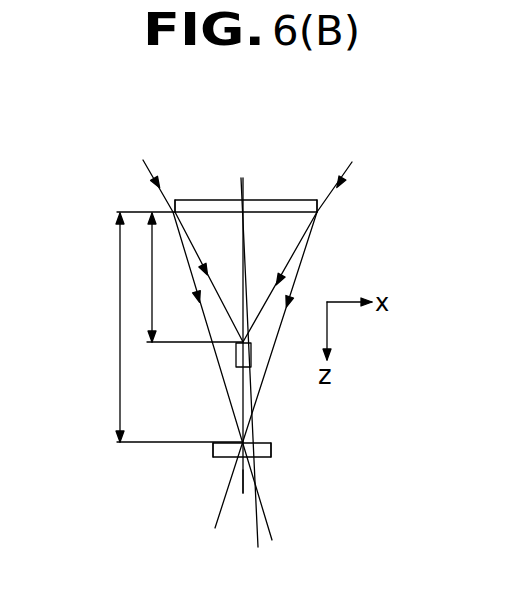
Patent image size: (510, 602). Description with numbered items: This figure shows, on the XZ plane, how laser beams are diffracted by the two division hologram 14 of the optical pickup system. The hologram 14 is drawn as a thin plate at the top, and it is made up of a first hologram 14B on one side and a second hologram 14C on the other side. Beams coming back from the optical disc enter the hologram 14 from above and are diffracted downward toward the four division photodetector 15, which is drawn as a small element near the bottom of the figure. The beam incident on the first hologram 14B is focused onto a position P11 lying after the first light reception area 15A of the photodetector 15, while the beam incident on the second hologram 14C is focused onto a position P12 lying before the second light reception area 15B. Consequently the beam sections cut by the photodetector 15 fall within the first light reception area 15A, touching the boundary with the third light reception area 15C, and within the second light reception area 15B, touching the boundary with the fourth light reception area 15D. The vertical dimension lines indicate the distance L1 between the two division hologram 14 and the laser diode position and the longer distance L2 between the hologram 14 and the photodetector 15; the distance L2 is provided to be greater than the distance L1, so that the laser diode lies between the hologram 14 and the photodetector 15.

The two division hologram 14 is at (201, 199).
The first hologram 14B is at (186, 202).
The second hologram 14C is at (319, 206).
The four division photodetector 15 is at (271, 457).
The first light reception area 15A is at (364, 439).
The second light reception area 15B is at (270, 447).
The third light reception area 15C is at (125, 493).
The fourth light reception area 15D is at (213, 450).
The position P11 is at (274, 493).
The position P12 is at (268, 386).
The distance L1 is at (195, 277).
The distance L2 is at (158, 327).